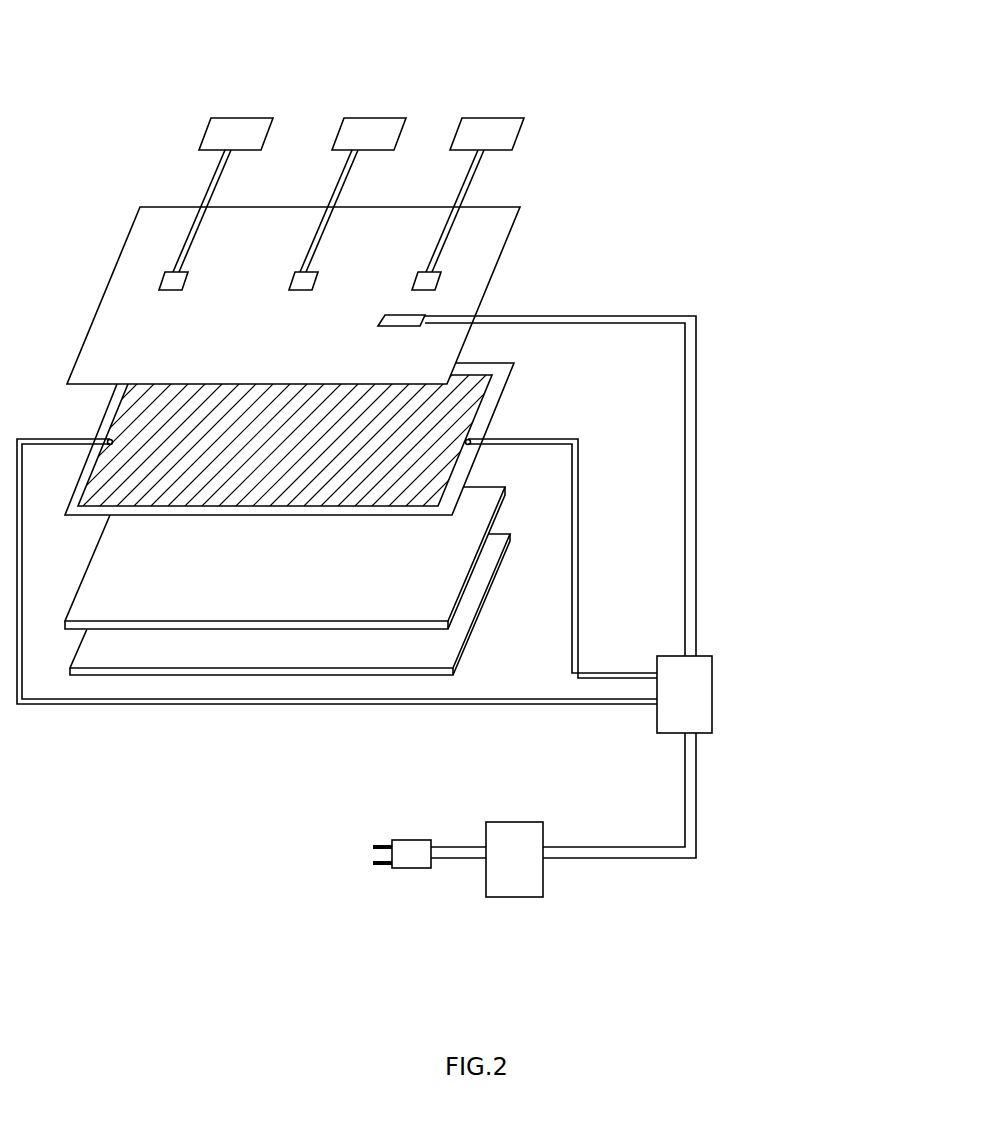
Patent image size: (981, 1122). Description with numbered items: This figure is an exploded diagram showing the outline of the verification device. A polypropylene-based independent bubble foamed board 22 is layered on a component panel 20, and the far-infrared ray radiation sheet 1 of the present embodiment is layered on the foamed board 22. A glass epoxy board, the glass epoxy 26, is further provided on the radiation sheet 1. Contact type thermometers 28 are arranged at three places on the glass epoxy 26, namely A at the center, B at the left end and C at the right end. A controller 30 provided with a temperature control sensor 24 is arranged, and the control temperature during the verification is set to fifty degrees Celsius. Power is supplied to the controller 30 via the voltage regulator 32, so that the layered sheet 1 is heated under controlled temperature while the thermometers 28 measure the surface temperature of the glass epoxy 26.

The far-infrared ray radiation sheet 1 is at (443, 412).
The component panel 20 is at (372, 643).
The polypropylene-based independent bubble foamed board 22 is at (143, 590).
The temperature control sensor 24 is at (402, 322).
The glass epoxy 26 is at (487, 230).
The contact type thermometer 28 is at (457, 128).
The controller 30 is at (708, 687).
The voltage regulator 32 is at (523, 877).